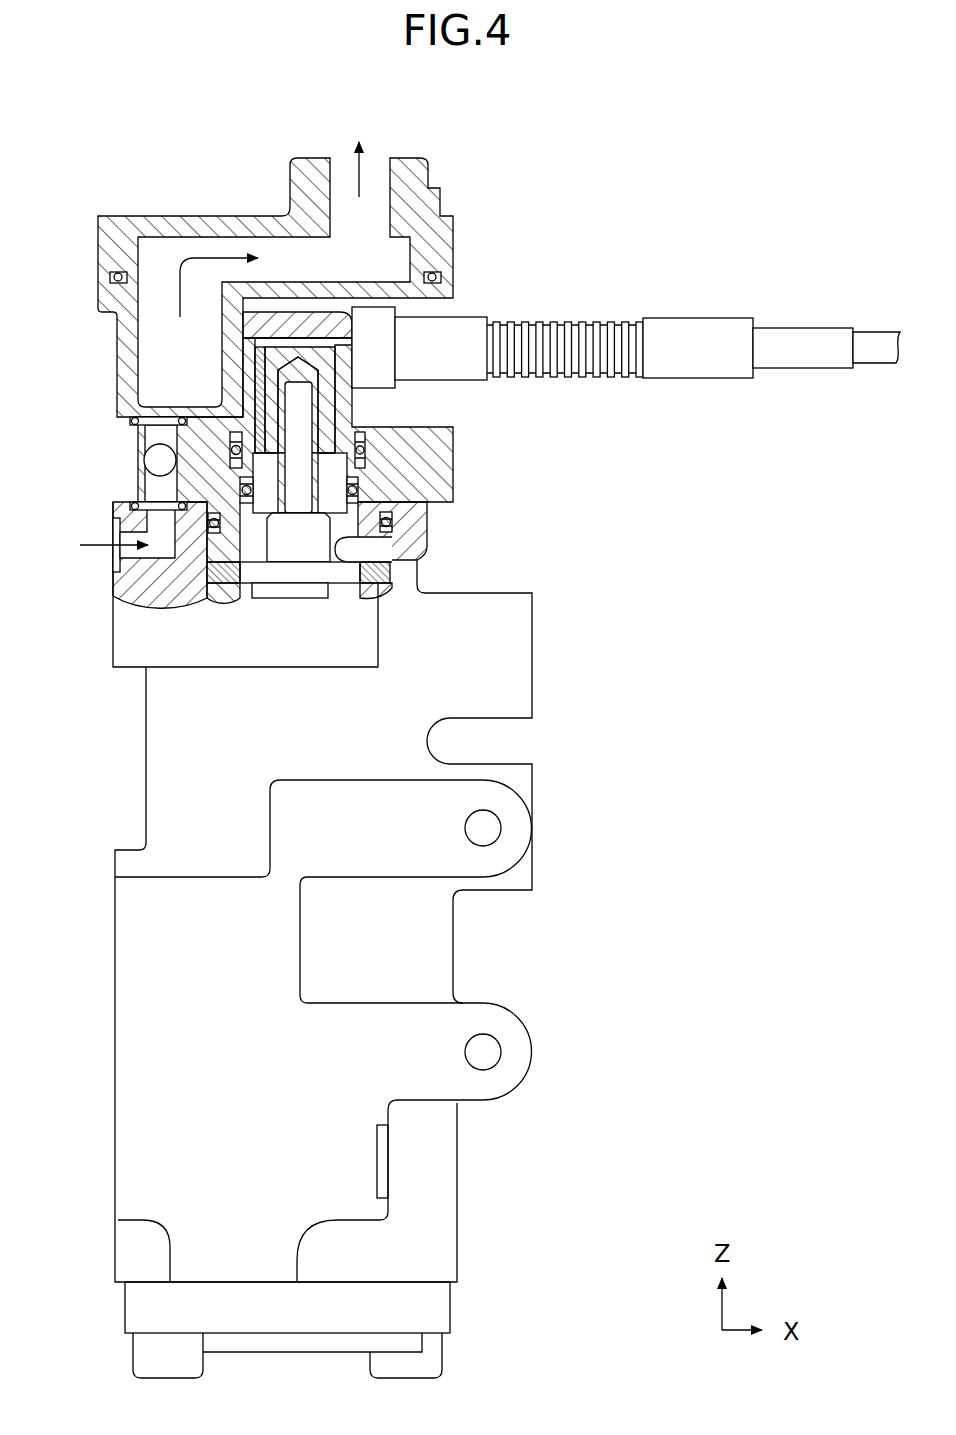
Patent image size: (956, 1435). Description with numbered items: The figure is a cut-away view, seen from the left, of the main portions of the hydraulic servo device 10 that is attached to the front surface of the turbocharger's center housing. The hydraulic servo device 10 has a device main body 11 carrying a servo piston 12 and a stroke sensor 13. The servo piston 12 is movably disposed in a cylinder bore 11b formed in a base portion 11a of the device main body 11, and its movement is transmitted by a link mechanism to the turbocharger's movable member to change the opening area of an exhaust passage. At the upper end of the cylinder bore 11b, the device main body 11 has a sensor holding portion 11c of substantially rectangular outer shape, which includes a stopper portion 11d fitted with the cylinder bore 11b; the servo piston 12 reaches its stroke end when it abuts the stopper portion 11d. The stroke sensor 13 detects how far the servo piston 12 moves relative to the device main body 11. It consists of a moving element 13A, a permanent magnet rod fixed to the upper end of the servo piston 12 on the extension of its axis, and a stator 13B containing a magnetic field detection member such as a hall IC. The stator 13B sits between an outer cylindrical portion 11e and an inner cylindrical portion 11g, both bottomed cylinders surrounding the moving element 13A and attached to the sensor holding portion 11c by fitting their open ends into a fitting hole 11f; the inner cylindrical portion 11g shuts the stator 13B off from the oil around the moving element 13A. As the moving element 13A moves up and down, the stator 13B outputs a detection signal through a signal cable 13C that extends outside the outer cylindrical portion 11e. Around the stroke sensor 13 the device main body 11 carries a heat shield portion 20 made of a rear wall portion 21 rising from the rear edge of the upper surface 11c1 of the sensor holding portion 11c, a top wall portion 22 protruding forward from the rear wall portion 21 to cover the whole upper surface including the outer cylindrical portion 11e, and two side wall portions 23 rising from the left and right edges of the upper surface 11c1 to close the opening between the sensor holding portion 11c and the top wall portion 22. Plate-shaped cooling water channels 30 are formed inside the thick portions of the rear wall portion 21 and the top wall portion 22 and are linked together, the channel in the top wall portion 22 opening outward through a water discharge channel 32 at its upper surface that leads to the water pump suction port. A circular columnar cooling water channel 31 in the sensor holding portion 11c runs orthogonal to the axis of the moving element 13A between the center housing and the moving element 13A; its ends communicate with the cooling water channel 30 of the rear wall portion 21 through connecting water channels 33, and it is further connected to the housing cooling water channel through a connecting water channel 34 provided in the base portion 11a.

The hydraulic servo device 10 is at (450, 746).
The device main body 11 is at (92, 665).
The base portion 11a is at (415, 508).
The cylinder bore 11b is at (218, 587).
The sensor holding portion 11c is at (440, 460).
The upper surface of the sensor holding portion 11c1 is at (126, 494).
The stopper portion 11d is at (373, 543).
The outer cylindrical portion 11e is at (300, 322).
The fitting hole 11f is at (348, 557).
The inner cylindrical portion 11g is at (360, 398).
The servo piston 12 is at (372, 580).
The stroke sensor 13 is at (450, 365).
The moving element 13A is at (298, 395).
The stator 13B is at (262, 362).
The signal cable 13C is at (795, 342).
The heat shield portion 20 is at (276, 340).
The rear wall portion 21 is at (127, 326).
The top wall portion 22 is at (245, 232).
The side wall portions 23 is at (440, 307).
The cooling water channel 30 is at (217, 243).
The cooling water channel 31 is at (150, 458).
The water discharge channel 32 is at (382, 180).
The connecting water channels 33 is at (140, 434).
The connecting water channel 34 is at (130, 553).